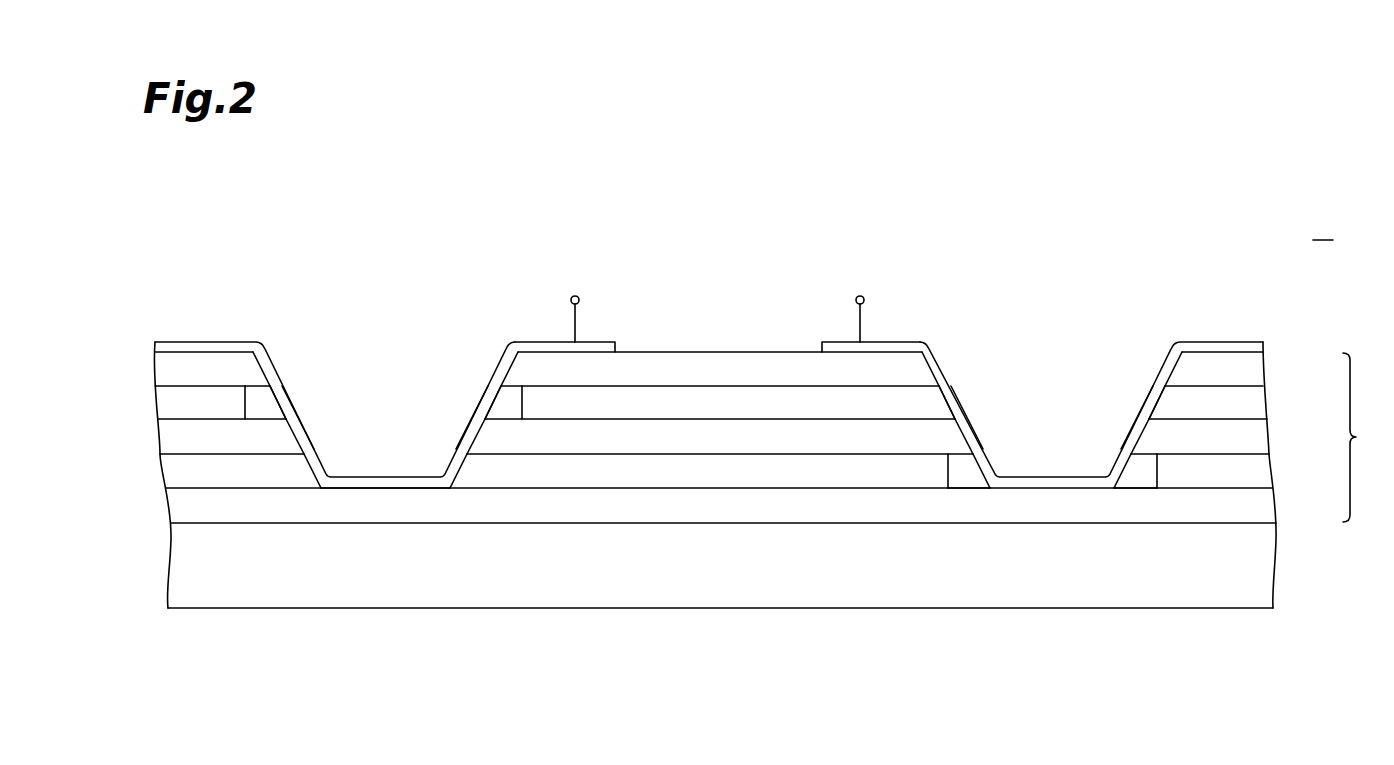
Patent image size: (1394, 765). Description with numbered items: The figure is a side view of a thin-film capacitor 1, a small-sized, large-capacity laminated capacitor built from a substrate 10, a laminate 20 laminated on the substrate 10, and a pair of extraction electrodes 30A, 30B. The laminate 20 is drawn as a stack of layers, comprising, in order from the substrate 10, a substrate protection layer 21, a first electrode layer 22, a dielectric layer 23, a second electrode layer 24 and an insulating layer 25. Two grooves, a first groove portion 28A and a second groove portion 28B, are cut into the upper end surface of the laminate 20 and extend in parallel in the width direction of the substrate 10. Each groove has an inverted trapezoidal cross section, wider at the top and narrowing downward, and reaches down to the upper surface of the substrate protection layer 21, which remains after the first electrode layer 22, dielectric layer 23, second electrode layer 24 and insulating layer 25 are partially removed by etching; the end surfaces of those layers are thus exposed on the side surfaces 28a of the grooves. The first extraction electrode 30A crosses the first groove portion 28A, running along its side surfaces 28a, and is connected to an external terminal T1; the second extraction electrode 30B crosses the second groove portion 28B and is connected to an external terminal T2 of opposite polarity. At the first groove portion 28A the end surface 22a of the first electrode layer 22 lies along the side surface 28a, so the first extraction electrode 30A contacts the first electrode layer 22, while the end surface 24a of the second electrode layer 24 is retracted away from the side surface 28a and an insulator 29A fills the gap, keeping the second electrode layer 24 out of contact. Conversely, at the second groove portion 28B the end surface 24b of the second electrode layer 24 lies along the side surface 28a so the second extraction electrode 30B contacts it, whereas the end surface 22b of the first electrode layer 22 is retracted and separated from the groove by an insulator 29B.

The thin-film capacitor 1 is at (1283, 304).
The substrate 10 is at (1253, 565).
The laminate 20 is at (1368, 437).
The substrate protection layer 21 is at (1253, 503).
The first electrode layer 22 is at (1255, 470).
The dielectric layer 23 is at (1255, 437).
The second electrode layer 24 is at (1255, 402).
The insulating layer 25 is at (1255, 365).
The end surface of the first electrode layer on the first groove portion side 22a is at (333, 478).
The end surface of the first electrode layer on the second groove portion side 22b is at (948, 470).
The end surface of the second electrode layer on the first groove portion side 24a is at (286, 396).
The end surface of the second electrode layer on the second groove portion side 24b is at (962, 392).
The first groove portion 28A is at (319, 342).
The second groove portion 28B is at (1121, 342).
The side surface 28a is at (462, 428).
The insulator 29A is at (493, 410).
The insulator 29B is at (990, 470).
The first extraction electrode 30A is at (510, 340).
The second extraction electrode 30B is at (925, 340).
The external terminal T1 is at (574, 304).
The external terminal T2 is at (859, 304).